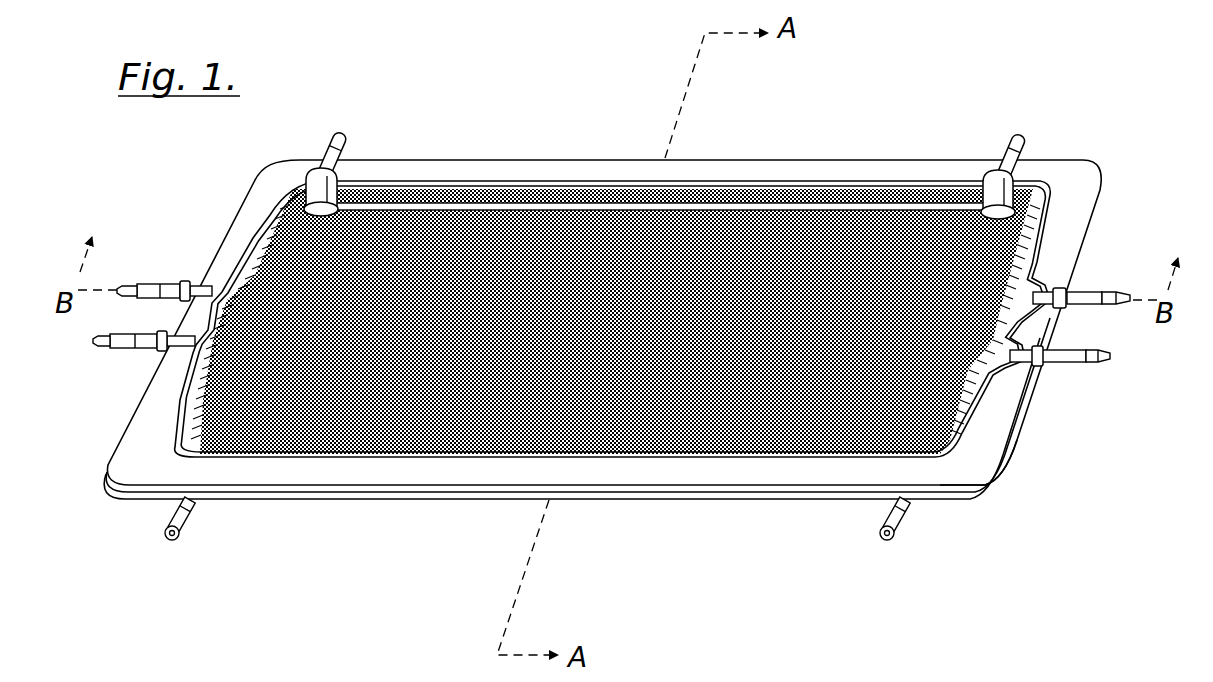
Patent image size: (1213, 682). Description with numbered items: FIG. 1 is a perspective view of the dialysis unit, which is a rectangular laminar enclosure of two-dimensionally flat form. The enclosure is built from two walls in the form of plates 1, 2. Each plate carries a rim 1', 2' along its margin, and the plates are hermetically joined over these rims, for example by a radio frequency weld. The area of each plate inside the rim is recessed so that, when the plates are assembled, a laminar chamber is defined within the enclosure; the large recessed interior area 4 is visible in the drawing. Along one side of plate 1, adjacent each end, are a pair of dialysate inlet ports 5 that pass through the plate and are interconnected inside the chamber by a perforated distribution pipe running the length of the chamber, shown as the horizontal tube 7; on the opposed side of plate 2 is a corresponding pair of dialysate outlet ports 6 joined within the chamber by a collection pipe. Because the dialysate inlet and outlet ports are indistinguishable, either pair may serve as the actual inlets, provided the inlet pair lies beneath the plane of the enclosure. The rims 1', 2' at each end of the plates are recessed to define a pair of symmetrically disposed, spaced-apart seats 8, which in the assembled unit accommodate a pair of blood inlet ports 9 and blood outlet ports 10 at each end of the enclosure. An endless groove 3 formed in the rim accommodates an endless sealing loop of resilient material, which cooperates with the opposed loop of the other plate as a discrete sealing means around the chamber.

The plate 1 is at (604, 364).
The rim 1' is at (978, 500).
The plate 2 is at (537, 504).
The rim 2' is at (1033, 389).
The endless groove 3 is at (487, 180).
The mesh screen 4 is at (575, 278).
The dialysate inlet ports 5 is at (183, 540).
The dialysate outlet ports 6 is at (343, 129).
The distribution tube 7 is at (790, 207).
The seats 8 is at (200, 282).
The blood inlet ports 9 is at (130, 286).
The blood outlet ports 10 is at (1085, 297).